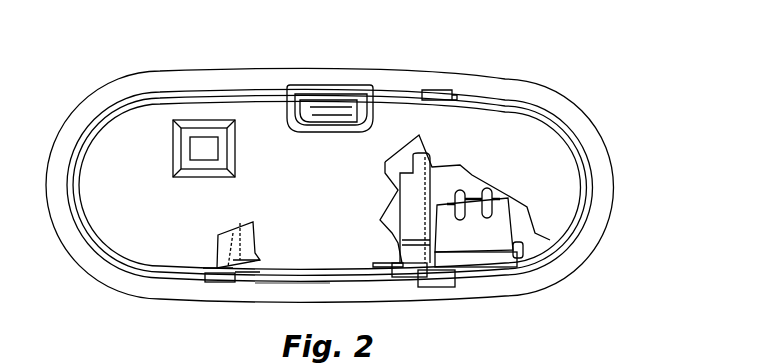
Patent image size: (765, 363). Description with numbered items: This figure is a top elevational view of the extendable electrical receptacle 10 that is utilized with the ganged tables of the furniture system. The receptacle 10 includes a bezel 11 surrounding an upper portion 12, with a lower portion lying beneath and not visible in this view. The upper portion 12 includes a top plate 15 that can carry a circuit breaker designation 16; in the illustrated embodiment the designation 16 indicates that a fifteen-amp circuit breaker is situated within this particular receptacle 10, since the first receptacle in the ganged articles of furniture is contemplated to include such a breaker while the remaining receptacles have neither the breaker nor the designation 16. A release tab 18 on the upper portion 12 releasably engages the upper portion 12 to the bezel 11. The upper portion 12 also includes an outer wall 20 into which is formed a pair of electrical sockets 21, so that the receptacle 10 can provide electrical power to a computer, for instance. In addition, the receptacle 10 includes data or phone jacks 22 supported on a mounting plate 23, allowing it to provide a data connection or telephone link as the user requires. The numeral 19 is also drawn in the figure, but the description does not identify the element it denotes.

The extendable electrical receptacle 10 is at (509, 71).
The bezel 11 is at (422, 81).
The upper portion 12 is at (543, 157).
The top plate 15 is at (309, 199).
The circuit breaker designation 16 is at (188, 125).
The release tab 18 is at (352, 117).
The seal ring 19 is at (257, 92).
The outer wall 20 is at (273, 273).
The electrical sockets 21 is at (477, 237).
The data or phone jacks 22 is at (395, 278).
The mounting plate 23 is at (430, 282).